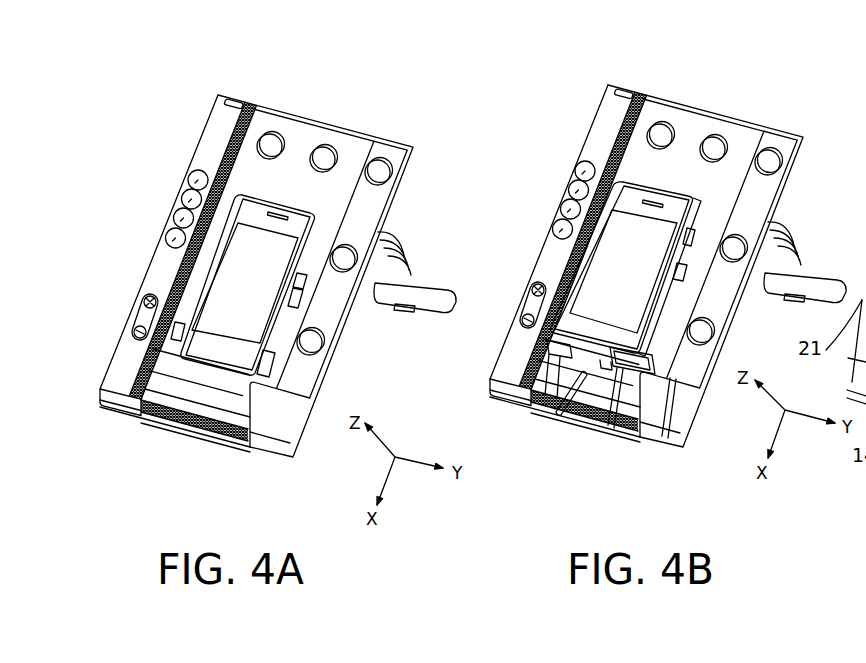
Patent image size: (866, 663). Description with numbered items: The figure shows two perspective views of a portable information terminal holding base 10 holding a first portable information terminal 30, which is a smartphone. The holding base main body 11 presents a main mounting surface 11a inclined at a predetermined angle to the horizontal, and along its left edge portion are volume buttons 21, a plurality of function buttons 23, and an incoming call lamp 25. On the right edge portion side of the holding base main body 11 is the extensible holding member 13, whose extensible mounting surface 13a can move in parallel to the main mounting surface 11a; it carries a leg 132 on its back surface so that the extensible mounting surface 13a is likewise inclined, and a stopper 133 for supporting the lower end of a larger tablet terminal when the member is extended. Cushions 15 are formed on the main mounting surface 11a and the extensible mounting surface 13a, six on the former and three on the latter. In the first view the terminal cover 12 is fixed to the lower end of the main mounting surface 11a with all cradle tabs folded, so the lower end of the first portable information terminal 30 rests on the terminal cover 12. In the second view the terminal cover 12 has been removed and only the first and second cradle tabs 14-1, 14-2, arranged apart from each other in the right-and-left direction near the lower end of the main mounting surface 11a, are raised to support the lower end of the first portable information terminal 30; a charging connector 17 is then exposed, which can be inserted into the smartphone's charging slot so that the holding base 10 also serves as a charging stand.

In FIG. 4A, the portable information terminal holding base 10 is at (403, 92).
In FIG. 4B, the portable information terminal holding base 10 is at (786, 102).
In FIG. 4A, the holding base main body 11 is at (225, 118).
In FIG. 4B, the holding base main body 11 is at (613, 108).
In FIG. 4A, the main mounting surface 11a is at (307, 140).
In FIG. 4B, the main mounting surface 11a is at (700, 128).
In FIG. 4A, the terminal cover 12 is at (187, 388).
In FIG. 4A, the extensible holding member 13 is at (332, 387).
In FIG. 4B, the extensible holding member 13 is at (720, 360).
In FIG. 4A, the extensible mounting surface 13a is at (385, 205).
In FIG. 4B, the extensible mounting surface 13a is at (775, 195).
In FIG. 4A, the leg 132 is at (420, 297).
In FIG. 4B, the leg 132 is at (808, 287).
In FIG. 4A, the stopper 133 is at (265, 415).
In FIG. 4B, the stopper 133 is at (650, 408).
In FIG. 4B, the first cradle tab 14-1 is at (548, 383).
In FIG. 4B, the second cradle tab 14-2 is at (617, 375).
In FIG. 4A, the cushions 15 is at (273, 143).
In FIG. 4B, the cushions 15 is at (663, 133).
In FIG. 4B, the charging connector 17 is at (585, 415).
In FIG. 4A, the volume buttons 21 is at (135, 330).
In FIG. 4B, the volume buttons 21 is at (522, 318).
In FIG. 4A, the function buttons 23 is at (167, 238).
In FIG. 4B, the function buttons 23 is at (557, 228).
In FIG. 4A, the incoming call lamp 25 is at (238, 96).
In FIG. 4B, the incoming call lamp 25 is at (628, 84).
In FIG. 4A, the first portable information terminal 30 is at (250, 206).
In FIG. 4B, the first portable information terminal 30 is at (630, 193).